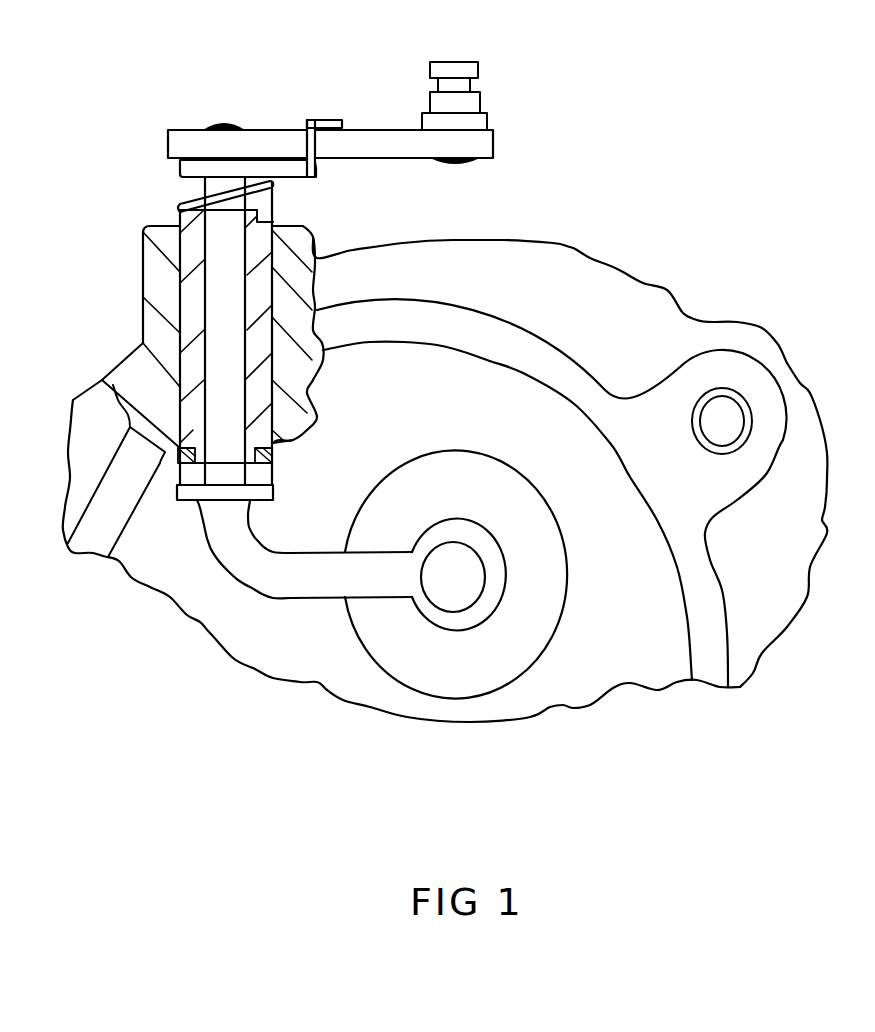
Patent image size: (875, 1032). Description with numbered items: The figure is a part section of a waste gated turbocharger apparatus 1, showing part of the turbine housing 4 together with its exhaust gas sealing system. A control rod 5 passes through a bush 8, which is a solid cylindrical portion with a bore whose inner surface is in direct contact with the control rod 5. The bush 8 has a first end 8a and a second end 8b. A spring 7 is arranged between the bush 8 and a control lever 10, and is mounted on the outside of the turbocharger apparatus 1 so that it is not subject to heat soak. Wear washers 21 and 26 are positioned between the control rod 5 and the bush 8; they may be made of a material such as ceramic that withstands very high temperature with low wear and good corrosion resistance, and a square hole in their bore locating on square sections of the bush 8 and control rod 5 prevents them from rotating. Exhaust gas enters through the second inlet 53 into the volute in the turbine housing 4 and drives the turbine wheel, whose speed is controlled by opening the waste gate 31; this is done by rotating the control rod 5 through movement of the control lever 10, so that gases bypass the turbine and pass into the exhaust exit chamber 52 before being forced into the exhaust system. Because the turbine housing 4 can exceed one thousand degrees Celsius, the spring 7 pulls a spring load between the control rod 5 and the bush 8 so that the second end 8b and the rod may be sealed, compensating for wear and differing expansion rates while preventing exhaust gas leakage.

The waste gated turbocharger apparatus 1 is at (656, 261).
The turbine housing 4 is at (685, 337).
The control rod 5 is at (228, 246).
The spring 7 is at (186, 172).
The bush 8 is at (284, 325).
The first end of the bush 8a is at (298, 201).
The second end of the bush 8b is at (349, 446).
The control lever 10 is at (478, 143).
The wear washer 21 is at (263, 459).
The wear washer 26 is at (262, 476).
The waste gate 31 is at (520, 534).
The exhaust exit chamber 52 is at (647, 597).
The second inlet 53 is at (827, 452).